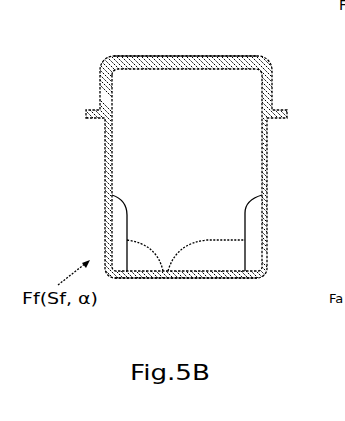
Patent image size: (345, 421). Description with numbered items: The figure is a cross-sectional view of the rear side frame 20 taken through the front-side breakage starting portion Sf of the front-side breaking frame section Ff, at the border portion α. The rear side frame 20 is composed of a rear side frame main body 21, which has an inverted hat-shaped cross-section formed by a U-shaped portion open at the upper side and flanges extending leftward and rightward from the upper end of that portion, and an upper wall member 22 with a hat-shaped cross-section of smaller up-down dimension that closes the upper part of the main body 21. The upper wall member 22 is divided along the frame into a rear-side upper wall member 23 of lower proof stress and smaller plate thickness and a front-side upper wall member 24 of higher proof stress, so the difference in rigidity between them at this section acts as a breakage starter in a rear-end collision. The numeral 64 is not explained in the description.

The rear side frame 20 is at (97, 55).
The rear side frame main body 21 is at (210, 279).
The upper wall member 22 is at (202, 235).
The rear-side upper wall member 23 is at (207, 71).
The front-side upper wall member 24 is at (251, 54).
The gusset fold portion 64 is at (163, 279).